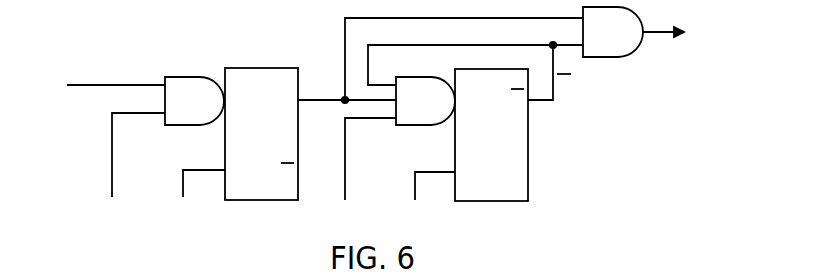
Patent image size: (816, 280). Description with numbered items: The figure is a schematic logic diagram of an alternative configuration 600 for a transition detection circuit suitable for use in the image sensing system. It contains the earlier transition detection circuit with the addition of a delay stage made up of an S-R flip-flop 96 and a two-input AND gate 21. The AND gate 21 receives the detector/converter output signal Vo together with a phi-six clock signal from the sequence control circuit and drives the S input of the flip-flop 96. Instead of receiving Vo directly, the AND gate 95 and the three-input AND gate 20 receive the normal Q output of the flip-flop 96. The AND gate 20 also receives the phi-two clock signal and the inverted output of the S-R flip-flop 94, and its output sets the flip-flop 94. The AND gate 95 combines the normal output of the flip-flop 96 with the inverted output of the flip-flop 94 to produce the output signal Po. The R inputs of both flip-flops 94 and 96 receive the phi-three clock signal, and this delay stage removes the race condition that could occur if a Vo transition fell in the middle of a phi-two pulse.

The AND gate 21 is at (184, 75).
The S-R flip-flop 96 is at (268, 67).
The AND gate 20 is at (413, 127).
The S-R flip-flop 94 is at (528, 147).
The AND gate 95 is at (630, 55).
The transition detection circuit 600 is at (645, 214).